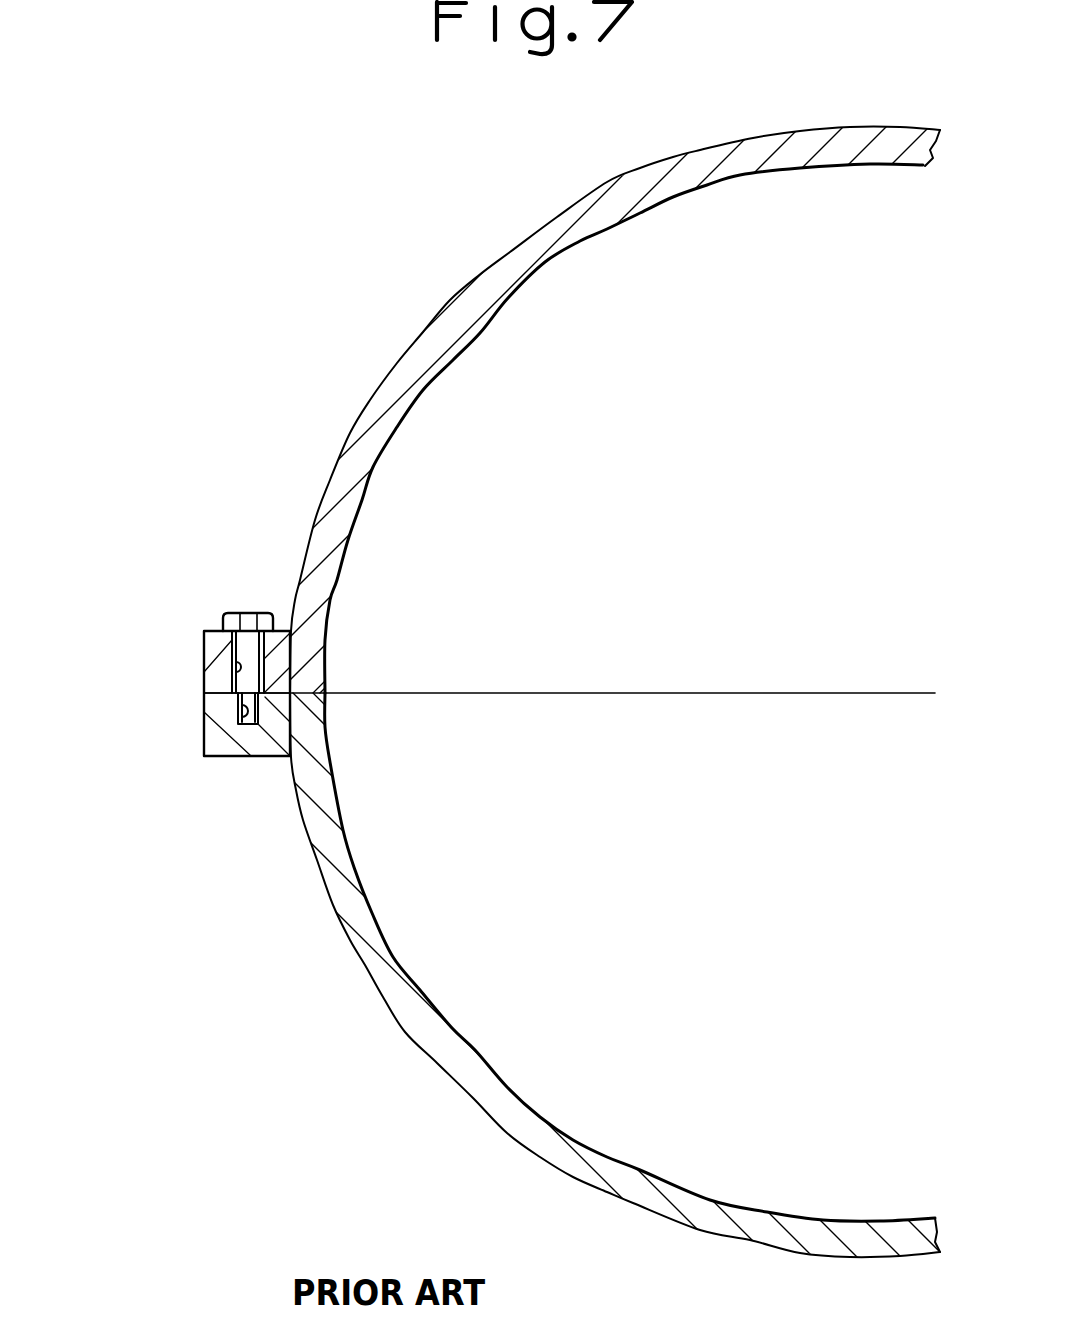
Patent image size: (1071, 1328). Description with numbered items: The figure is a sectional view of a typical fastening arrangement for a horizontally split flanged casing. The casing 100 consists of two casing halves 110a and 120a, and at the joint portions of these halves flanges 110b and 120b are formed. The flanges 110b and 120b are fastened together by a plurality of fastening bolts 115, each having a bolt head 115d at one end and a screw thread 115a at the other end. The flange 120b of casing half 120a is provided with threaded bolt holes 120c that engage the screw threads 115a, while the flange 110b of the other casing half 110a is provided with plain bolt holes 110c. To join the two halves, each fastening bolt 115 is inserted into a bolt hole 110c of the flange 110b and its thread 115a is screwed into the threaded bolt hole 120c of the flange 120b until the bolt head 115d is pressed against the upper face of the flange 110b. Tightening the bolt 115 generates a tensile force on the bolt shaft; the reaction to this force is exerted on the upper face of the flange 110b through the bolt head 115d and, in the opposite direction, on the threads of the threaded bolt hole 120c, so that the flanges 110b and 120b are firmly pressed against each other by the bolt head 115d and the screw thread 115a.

The casing 100 is at (458, 228).
The casing half 110a is at (647, 183).
The flange 110b is at (217, 638).
The bolt hole 110c is at (232, 671).
The fastening bolt 115 is at (252, 653).
The screw thread 115a is at (265, 716).
The bolt head 115d is at (265, 613).
The casing half 120a is at (507, 1103).
The flange 120b is at (223, 747).
The threaded bolt hole 120c is at (242, 720).